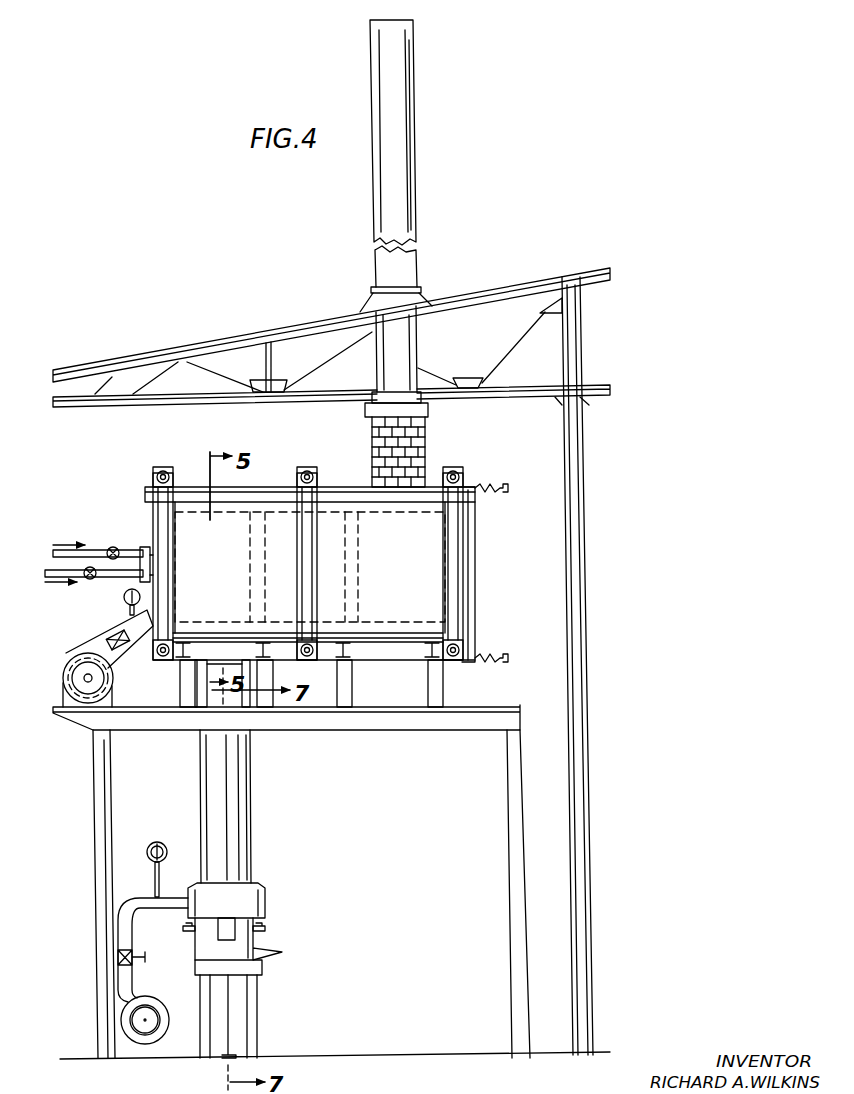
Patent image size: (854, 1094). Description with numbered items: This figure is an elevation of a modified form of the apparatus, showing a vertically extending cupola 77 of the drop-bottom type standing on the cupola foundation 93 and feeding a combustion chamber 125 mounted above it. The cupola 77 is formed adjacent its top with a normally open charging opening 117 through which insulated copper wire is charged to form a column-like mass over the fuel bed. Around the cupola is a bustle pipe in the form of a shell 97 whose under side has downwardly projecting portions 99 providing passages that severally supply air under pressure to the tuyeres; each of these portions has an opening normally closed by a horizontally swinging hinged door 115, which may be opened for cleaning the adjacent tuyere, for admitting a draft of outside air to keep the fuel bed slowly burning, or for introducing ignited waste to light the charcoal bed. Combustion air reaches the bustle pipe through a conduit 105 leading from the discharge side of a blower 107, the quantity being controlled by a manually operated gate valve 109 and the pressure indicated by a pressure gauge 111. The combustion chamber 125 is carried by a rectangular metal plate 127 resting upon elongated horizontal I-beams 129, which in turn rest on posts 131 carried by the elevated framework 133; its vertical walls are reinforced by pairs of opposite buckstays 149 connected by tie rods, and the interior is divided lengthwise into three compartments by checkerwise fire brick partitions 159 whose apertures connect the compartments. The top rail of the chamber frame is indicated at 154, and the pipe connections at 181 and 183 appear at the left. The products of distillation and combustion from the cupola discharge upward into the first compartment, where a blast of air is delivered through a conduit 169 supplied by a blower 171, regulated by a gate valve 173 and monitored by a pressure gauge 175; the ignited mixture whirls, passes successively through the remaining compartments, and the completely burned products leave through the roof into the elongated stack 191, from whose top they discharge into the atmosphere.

The stack 191 is at (413, 197).
The combustion chamber 125 is at (419, 557).
The top frame rail 154 is at (353, 486).
The rectangular metal plate 127 is at (393, 635).
The buckstays 149 is at (175, 561).
The partitions 159 is at (250, 576).
The I-beams 129 is at (350, 649).
The posts 131 is at (418, 688).
The elevated framework 133 is at (504, 755).
The charging opening 117 is at (215, 700).
The cupola 77 is at (252, 808).
The bustle pipe shell 97 is at (267, 897).
The hinged door 115 is at (228, 921).
The downwardly projecting portions 99 is at (265, 926).
The pressure gauge 111 is at (163, 843).
The conduit 105 is at (143, 898).
The gate valve 109 is at (132, 953).
The blower 107 is at (155, 1000).
The cupola foundation 93 is at (382, 1055).
The gas supply pipes 183 is at (105, 548).
The burner manifold 181 is at (127, 570).
The pressure gauge 175 is at (121, 594).
The gate valve 173 is at (109, 624).
The conduit 169 is at (97, 643).
The blower 171 is at (72, 669).